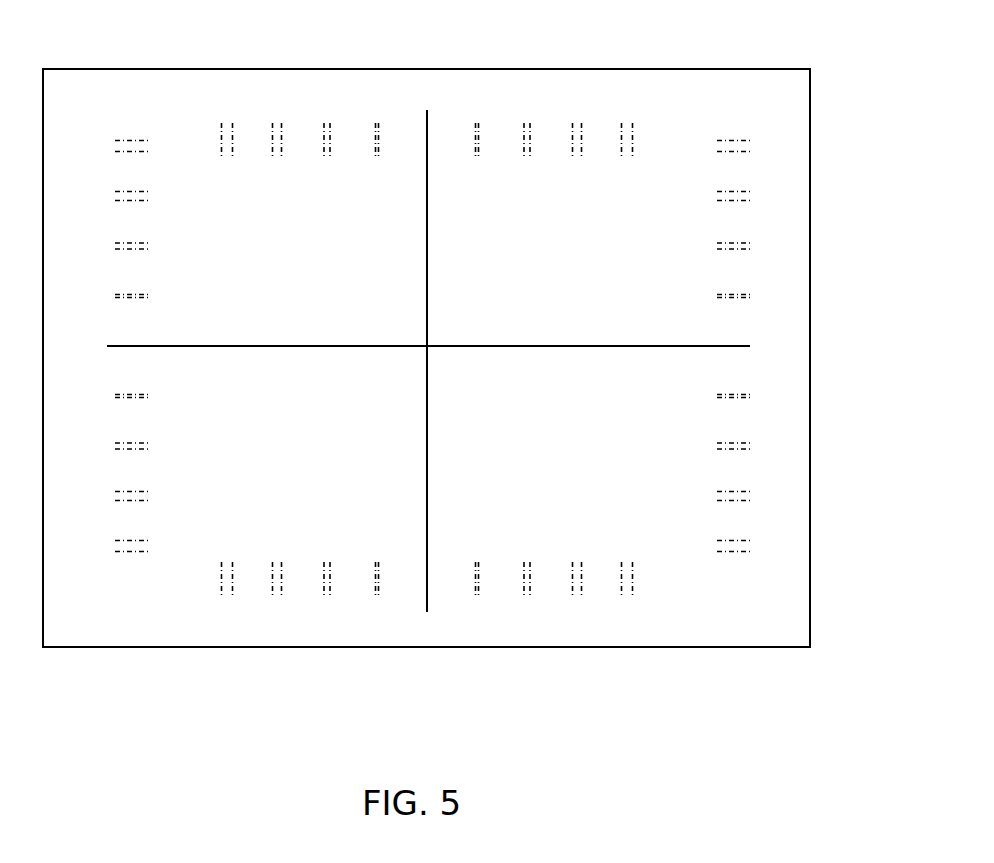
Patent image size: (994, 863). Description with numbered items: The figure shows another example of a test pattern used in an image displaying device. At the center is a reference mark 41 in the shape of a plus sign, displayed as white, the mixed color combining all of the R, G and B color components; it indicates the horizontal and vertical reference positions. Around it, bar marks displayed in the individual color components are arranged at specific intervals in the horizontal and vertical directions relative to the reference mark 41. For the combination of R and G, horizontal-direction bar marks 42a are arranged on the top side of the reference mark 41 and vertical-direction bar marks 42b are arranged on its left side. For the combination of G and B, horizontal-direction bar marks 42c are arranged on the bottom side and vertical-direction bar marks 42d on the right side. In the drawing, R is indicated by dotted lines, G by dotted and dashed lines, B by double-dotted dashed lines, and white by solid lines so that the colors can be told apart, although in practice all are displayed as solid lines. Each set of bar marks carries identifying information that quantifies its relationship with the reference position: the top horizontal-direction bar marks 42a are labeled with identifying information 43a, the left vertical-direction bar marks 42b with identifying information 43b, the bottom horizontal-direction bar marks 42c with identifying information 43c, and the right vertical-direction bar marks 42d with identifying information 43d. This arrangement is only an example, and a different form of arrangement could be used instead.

The reference mark 41 is at (428, 410).
The horizontal-direction bar marks 42a is at (484, 98).
The identifying information 43a is at (463, 60).
The vertical-direction bar marks 42b is at (122, 416).
The identifying information 43b is at (64, 413).
The horizontal-direction bar marks 42c is at (476, 631).
The identifying information 43c is at (457, 672).
The vertical-direction bar marks 42d is at (747, 416).
The identifying information 43d is at (801, 412).